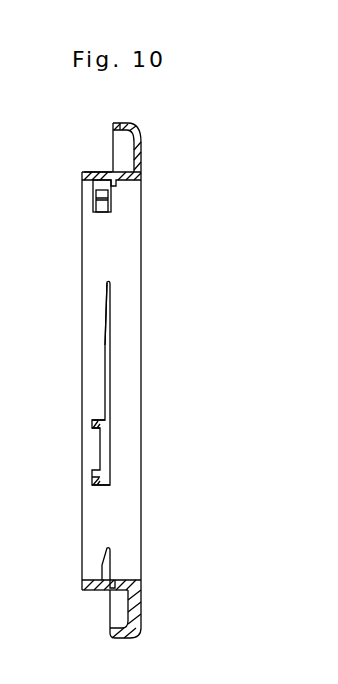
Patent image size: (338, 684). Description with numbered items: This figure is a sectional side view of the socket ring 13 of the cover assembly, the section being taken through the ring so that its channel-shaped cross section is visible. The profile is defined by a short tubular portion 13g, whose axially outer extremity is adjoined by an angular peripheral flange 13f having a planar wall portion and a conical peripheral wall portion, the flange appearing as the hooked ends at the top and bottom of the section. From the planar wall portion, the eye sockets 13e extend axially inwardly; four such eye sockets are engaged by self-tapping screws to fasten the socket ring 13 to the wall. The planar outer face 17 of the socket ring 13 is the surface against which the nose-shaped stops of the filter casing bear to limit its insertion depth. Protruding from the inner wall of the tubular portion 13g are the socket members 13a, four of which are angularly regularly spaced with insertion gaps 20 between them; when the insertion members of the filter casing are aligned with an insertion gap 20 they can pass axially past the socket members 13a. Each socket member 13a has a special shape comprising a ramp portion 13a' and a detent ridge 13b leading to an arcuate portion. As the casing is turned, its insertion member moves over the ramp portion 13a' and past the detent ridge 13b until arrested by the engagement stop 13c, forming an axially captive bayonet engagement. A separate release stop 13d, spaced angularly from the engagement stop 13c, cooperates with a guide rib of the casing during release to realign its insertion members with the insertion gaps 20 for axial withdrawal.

The socket ring 13 is at (75, 565).
The socket member 13a is at (96, 380).
The ramp portion 13a' is at (149, 314).
The detent ridge 13b is at (105, 342).
The engagement stop 13c is at (92, 425).
The release stop 13d is at (92, 483).
The eye socket 13e is at (10, 200).
The angular peripheral flange 13f is at (115, 125).
The tubular portion 13g is at (93, 173).
The planar outer face 17 is at (138, 167).
The insertion gap 20 is at (100, 512).